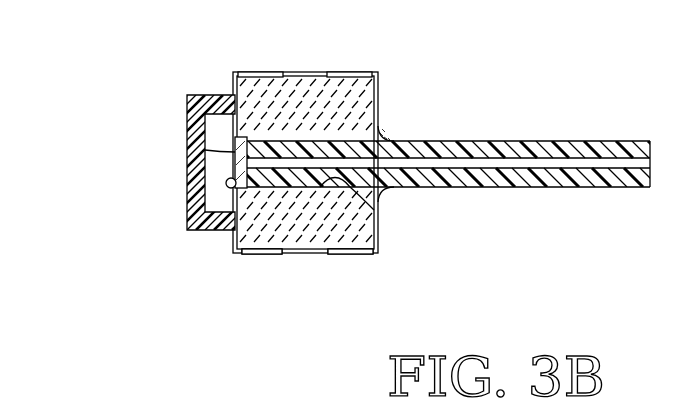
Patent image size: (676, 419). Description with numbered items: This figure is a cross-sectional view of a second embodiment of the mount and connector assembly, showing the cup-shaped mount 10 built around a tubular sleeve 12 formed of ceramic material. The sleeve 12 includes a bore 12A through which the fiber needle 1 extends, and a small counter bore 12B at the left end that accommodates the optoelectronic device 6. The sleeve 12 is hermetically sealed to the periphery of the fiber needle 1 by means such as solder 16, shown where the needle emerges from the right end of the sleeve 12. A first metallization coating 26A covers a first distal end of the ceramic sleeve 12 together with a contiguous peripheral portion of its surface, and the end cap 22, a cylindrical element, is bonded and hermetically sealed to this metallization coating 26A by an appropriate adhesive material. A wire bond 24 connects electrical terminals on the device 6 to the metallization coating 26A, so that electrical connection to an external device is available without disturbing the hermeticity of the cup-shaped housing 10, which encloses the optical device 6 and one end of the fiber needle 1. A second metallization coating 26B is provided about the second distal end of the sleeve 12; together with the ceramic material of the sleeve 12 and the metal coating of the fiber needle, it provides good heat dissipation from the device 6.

The cup-shaped mount 10 is at (143, 51).
The tubular sleeve 12 is at (307, 73).
The fiber needle 1 is at (558, 141).
The solder 16 is at (383, 132).
The bore 12A is at (374, 210).
The counter bore 12B is at (238, 172).
The optoelectronic device 6 is at (205, 148).
The end cap 22 is at (188, 230).
The wire bond 24 is at (226, 184).
The metallization coating 26A is at (258, 254).
The second metallization coating 26B is at (348, 254).